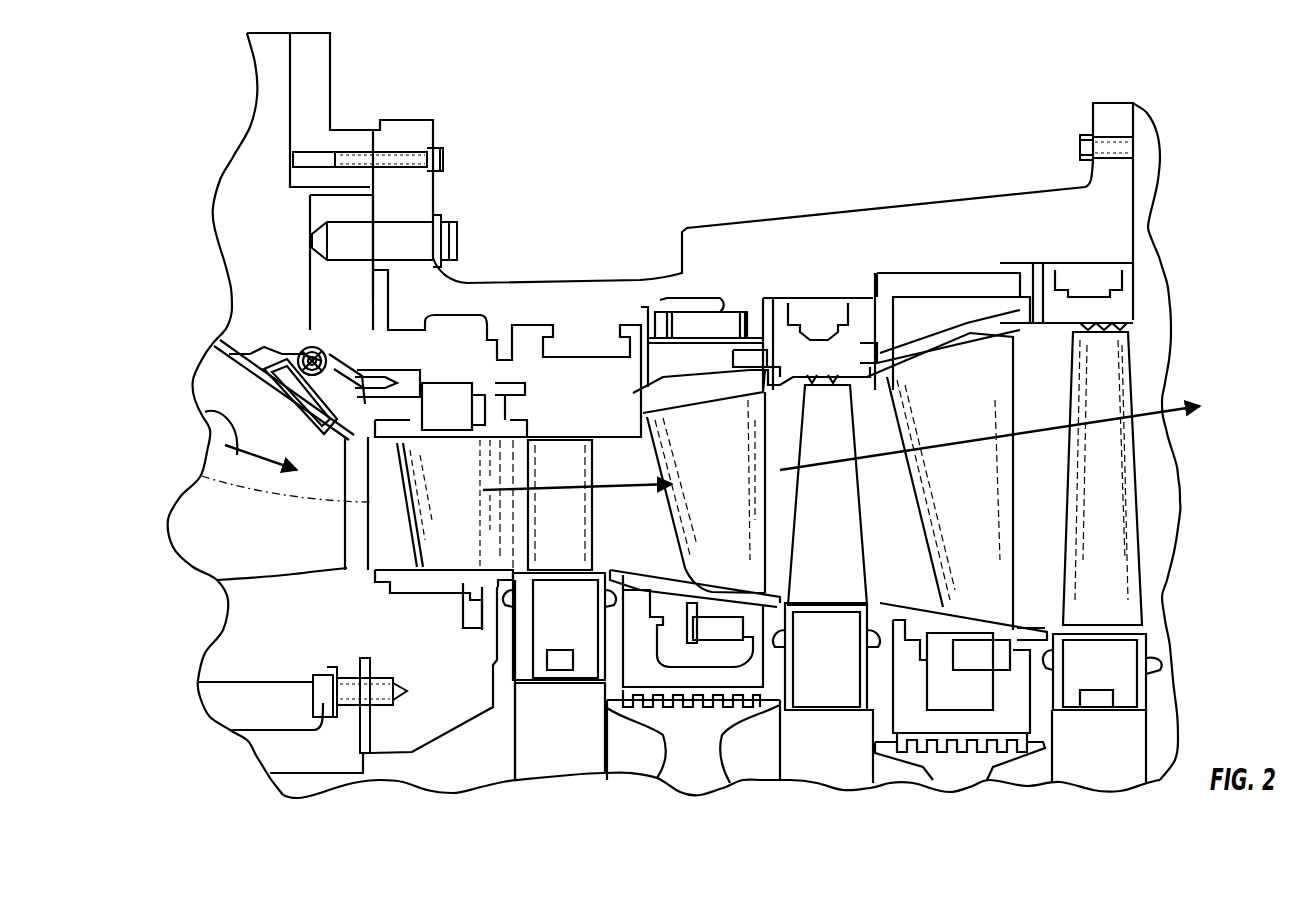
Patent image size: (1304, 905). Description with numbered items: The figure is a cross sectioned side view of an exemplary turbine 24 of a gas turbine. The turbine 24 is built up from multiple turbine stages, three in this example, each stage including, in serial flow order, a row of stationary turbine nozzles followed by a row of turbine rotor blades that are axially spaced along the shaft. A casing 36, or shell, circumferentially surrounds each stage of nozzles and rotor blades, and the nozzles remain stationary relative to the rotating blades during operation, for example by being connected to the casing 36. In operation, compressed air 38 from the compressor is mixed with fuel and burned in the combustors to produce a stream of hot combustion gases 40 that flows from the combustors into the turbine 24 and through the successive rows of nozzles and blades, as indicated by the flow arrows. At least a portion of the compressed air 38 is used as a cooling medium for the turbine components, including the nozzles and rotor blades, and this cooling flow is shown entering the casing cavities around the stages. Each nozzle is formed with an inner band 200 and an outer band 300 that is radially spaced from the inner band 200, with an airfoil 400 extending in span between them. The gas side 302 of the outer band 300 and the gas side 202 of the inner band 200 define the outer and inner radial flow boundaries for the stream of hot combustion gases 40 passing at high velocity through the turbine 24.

The turbine 24 is at (592, 130).
The casing 36 is at (787, 240).
The compressed air 38 is at (438, 426).
The hot combustion gases 40 is at (205, 412).
The inner band 200 is at (356, 675).
The gas side of the inner band 202 is at (432, 563).
The outer band 300 is at (503, 435).
The gas side of the outer band 302 is at (440, 445).
The airfoil 400 is at (478, 512).